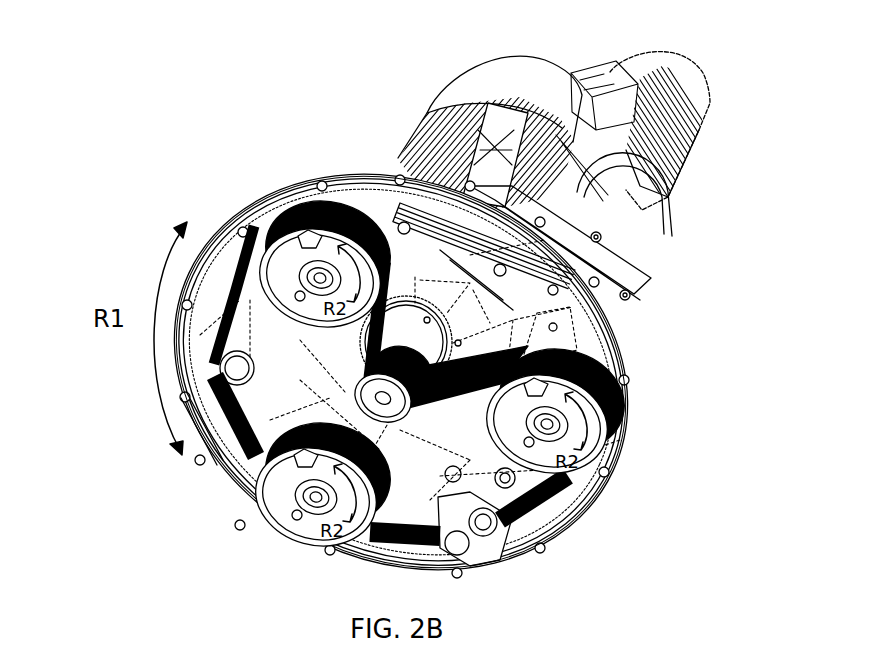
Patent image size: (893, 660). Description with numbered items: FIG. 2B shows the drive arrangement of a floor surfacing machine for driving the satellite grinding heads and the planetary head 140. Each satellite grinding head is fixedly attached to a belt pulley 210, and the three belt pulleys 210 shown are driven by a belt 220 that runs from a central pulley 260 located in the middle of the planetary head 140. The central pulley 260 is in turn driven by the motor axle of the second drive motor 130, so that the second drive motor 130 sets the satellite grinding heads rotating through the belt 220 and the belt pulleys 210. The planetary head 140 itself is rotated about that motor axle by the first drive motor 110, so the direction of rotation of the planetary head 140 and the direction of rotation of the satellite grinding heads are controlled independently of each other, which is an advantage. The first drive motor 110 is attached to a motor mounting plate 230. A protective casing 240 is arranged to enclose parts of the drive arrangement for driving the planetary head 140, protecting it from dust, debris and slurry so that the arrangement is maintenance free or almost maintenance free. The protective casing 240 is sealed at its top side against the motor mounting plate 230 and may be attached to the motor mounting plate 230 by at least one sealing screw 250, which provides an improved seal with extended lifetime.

The first drive motor 110 is at (688, 60).
The second drive motor 130 is at (468, 74).
The planetary head 140 is at (218, 234).
The belt pulley 210 is at (285, 234).
The belt 220 is at (547, 497).
The motor mounting plate 230 is at (640, 313).
The protective casing 240 is at (613, 262).
The sealing screw 250 is at (600, 236).
The central pulley 260 is at (368, 398).